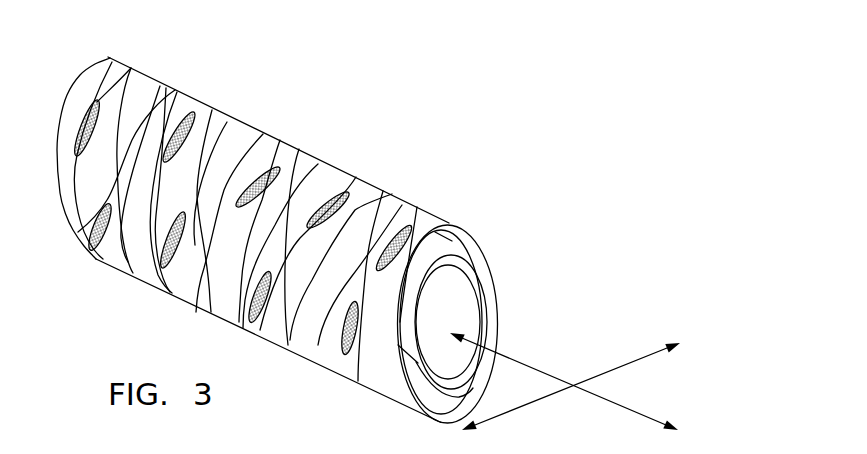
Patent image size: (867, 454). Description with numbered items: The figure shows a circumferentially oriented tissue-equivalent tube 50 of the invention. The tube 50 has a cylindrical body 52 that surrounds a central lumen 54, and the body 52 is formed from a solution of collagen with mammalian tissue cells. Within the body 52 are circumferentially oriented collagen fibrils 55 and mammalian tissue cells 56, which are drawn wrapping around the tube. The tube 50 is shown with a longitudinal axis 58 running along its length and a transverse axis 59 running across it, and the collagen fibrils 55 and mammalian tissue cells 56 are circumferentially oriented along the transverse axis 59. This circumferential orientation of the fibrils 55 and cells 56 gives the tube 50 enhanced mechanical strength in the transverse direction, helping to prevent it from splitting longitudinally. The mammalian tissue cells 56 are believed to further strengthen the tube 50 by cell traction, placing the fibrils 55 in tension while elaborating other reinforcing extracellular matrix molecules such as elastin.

The tissue-equivalent tube 50 is at (277, 223).
The cylindrical body 52 is at (351, 155).
The central lumen 54 is at (452, 305).
The collagen fibrils 55 is at (212, 142).
The mammalian tissue cells 56 is at (413, 230).
The longitudinal axis 58 is at (632, 410).
The transverse axis 59 is at (620, 365).